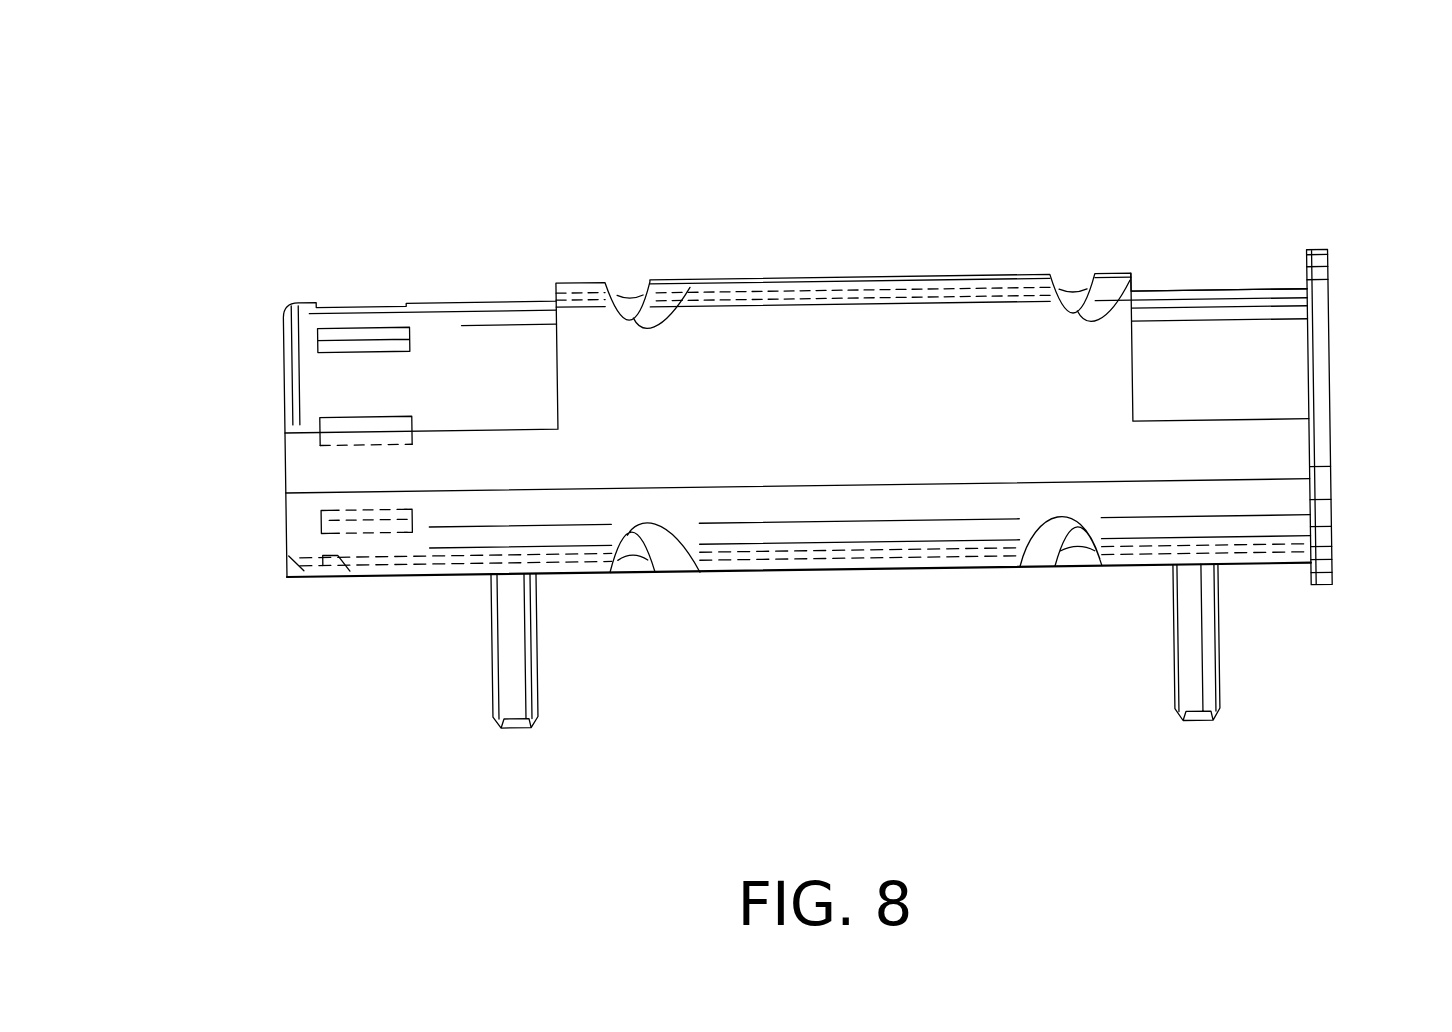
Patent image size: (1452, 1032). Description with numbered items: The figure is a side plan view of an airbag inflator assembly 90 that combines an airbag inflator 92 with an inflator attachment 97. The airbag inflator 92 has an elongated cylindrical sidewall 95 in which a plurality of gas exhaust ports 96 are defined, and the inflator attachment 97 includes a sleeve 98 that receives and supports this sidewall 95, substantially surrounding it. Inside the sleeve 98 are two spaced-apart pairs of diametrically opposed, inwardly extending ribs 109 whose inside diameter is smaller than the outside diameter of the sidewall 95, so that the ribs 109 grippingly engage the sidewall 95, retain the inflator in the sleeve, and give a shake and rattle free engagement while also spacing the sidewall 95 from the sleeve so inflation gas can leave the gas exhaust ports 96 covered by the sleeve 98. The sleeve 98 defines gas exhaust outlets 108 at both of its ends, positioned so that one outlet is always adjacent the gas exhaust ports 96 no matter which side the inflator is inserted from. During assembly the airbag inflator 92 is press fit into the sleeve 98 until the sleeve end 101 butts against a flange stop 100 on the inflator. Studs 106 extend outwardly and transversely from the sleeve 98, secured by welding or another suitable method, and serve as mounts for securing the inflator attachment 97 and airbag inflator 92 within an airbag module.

The airbag inflator assembly 90 is at (893, 128).
The airbag inflator 92 is at (530, 284).
The sidewall 95 is at (483, 300).
The gas exhaust ports 96 is at (412, 338).
The inflator attachment 97 is at (781, 264).
The sleeve 98 is at (913, 277).
The flange stop 100 is at (1317, 250).
The sleeve end 101 is at (1306, 492).
The studs 106 is at (527, 672).
The gas exhaust outlets 108 is at (305, 430).
The ribs 109 is at (688, 292).